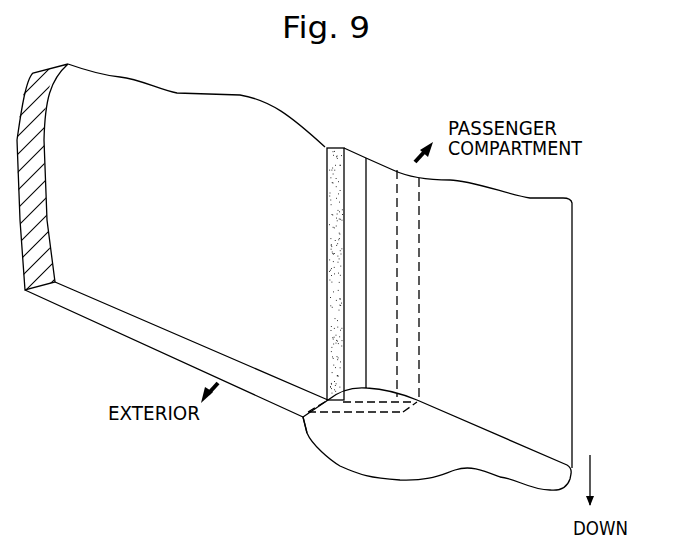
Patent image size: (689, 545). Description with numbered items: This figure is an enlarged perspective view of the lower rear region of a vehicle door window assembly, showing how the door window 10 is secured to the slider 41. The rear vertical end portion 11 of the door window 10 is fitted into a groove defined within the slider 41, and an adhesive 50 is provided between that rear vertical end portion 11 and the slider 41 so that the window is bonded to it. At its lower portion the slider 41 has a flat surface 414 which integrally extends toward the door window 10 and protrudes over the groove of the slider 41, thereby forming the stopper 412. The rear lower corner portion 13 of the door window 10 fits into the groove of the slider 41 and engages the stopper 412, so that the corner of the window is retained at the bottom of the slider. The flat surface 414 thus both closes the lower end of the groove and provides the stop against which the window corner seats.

The door window 10 is at (125, 95).
The adhesive 50 is at (334, 148).
The slider 41 is at (577, 247).
The rear vertical end portion 11 is at (388, 275).
The flat surface 414 is at (442, 440).
The rear lower corner portion 13 is at (353, 410).
The stopper 412 is at (300, 426).